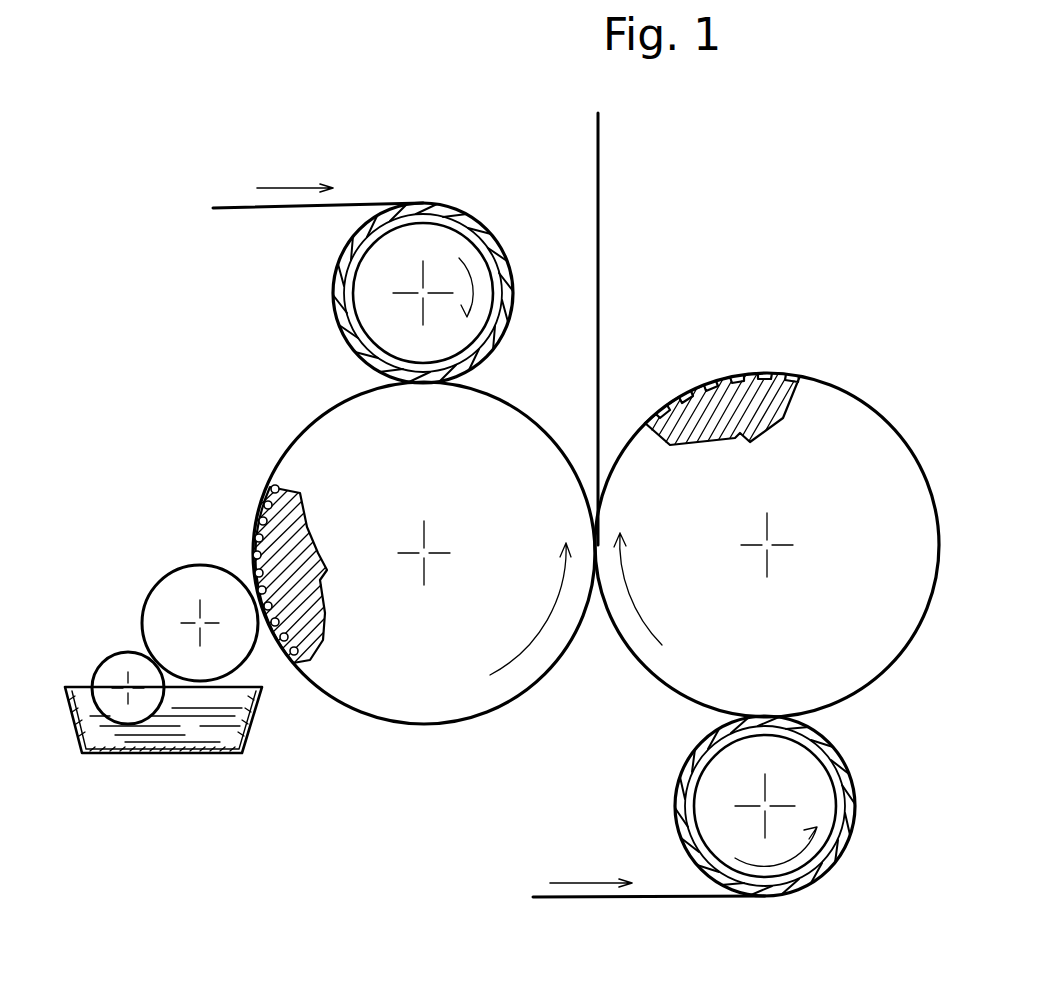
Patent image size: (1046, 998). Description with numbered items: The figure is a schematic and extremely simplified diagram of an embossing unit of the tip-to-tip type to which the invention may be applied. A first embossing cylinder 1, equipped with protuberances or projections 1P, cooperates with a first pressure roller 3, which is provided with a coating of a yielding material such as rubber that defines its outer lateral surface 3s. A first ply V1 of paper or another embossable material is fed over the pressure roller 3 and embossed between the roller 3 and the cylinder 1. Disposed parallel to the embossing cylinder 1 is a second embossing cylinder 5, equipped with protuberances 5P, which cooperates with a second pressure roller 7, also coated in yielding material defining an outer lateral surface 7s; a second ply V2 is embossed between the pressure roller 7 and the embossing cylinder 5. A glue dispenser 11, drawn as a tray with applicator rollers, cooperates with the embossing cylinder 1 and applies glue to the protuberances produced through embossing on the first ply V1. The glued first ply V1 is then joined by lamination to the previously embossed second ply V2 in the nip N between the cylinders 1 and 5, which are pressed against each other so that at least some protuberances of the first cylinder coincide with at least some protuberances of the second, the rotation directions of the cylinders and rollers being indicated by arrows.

The first embossing cylinder 1 is at (431, 713).
The protuberances 1P is at (263, 488).
The first pressure roller 3 is at (383, 325).
The outer lateral surface 3s is at (327, 310).
The second embossing cylinder 5 is at (840, 407).
The protuberances 5P is at (717, 388).
The pressure roller 7 is at (715, 812).
The outer lateral surface 7s is at (689, 756).
The glue dispenser 11 is at (107, 596).
The nip N is at (600, 228).
The first ply V1 is at (278, 212).
The second ply V2 is at (628, 900).